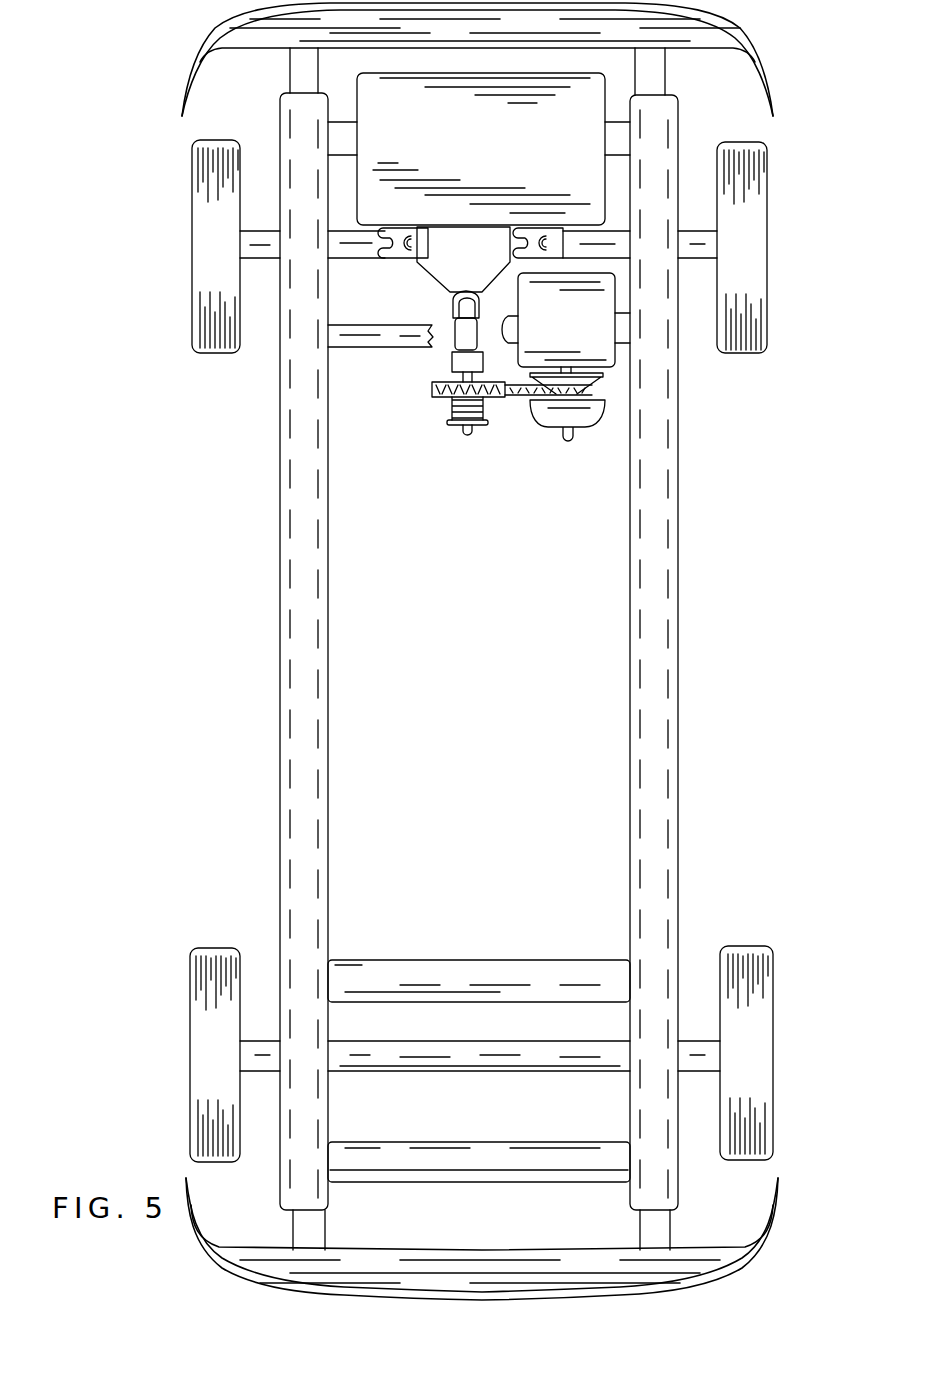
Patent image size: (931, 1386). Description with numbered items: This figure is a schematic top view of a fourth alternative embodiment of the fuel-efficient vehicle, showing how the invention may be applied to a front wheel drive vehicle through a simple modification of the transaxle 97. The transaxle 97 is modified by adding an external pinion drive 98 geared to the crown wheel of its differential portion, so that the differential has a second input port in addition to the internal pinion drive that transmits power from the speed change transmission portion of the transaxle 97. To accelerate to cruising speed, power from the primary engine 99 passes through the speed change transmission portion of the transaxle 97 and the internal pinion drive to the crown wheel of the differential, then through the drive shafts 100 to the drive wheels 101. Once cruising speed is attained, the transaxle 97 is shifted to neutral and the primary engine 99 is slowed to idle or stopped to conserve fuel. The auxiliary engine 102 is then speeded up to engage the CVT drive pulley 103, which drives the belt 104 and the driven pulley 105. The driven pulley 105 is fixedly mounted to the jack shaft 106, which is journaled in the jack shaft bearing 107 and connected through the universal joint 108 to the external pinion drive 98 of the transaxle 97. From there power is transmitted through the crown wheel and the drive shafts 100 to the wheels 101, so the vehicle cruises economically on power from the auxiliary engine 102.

The transaxle 97 is at (484, 265).
The external pinion drive 98 is at (457, 297).
The primary engine 99 is at (478, 157).
The drive shafts 100 is at (348, 260).
The drive wheels 101 is at (192, 196).
The auxiliary engine 102 is at (594, 336).
The CVT drive pulley 103 is at (602, 417).
The drive belt 104 is at (516, 398).
The driven pulley 105 is at (437, 397).
The jack shaft 106 is at (467, 435).
The jack shaft bearing 107 is at (453, 362).
The universal joint 108 is at (335, 328).